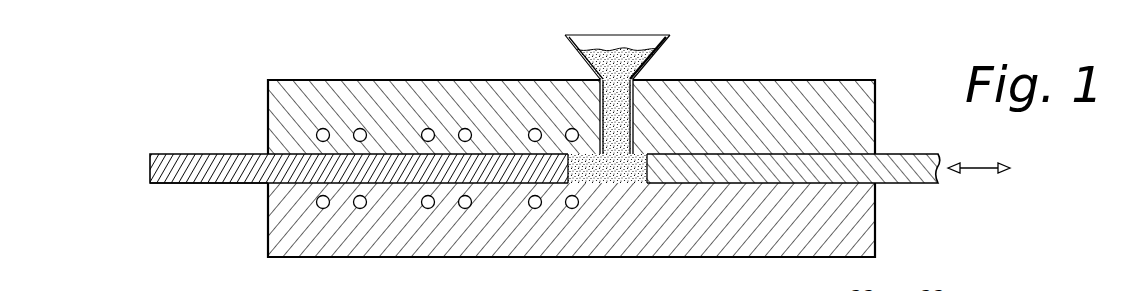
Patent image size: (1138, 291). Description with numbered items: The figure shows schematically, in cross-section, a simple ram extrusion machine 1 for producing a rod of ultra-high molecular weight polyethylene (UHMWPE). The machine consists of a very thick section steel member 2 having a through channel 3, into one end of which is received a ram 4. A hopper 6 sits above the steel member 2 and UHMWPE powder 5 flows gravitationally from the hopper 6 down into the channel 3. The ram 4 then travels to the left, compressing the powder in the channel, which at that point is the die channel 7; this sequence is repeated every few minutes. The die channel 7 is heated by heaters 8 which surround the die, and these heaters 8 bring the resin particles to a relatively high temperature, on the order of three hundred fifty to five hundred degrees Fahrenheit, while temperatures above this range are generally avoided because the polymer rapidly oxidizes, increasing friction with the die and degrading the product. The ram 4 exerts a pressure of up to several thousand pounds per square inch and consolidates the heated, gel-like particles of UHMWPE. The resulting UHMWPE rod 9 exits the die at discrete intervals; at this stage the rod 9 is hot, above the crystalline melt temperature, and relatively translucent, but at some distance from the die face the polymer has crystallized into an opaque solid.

The extrusion apparatus 1 is at (545, 157).
The thick section steel member 2 is at (742, 92).
The through channel 3 is at (625, 183).
The ram 4 is at (793, 173).
The UHMWPE powder 5 is at (610, 120).
The hopper 6 is at (633, 37).
The die channel 7 is at (385, 183).
The heaters 8 is at (323, 209).
The UHMWPE rod 9 is at (215, 183).